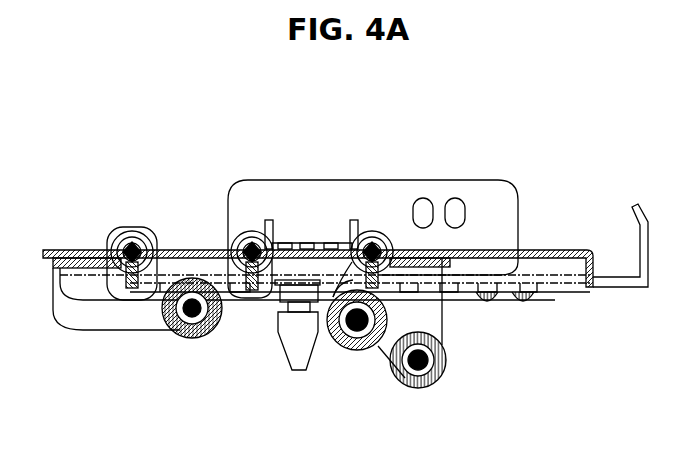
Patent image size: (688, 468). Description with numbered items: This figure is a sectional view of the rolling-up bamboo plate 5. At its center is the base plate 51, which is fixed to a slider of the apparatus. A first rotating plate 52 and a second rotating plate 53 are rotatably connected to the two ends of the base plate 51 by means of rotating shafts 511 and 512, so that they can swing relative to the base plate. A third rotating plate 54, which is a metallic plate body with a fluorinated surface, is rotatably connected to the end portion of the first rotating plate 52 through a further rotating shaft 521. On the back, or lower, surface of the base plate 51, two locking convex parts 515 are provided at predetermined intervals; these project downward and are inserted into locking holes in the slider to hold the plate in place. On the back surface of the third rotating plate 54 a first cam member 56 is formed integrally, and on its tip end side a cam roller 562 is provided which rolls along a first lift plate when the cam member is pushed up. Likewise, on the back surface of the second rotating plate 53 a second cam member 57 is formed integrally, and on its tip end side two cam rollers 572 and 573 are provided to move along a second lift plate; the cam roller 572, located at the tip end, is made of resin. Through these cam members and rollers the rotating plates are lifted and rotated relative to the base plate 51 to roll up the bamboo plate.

The rolling-up bamboo plate 5 is at (461, 172).
The base plate 51 is at (310, 249).
The rotating shaft 511 is at (252, 246).
The rotating shaft 512 is at (373, 246).
The locking convex part 515 is at (298, 372).
The first rotating plate 52 is at (196, 250).
The rotating shaft 521 is at (131, 244).
The second rotating plate 53 is at (549, 250).
The third rotating plate 54 is at (70, 250).
The first cam member 56 is at (125, 346).
The cam roller 562 is at (193, 340).
The second cam member 57 is at (478, 391).
The cam roller 572 is at (419, 390).
The cam roller 573 is at (356, 352).